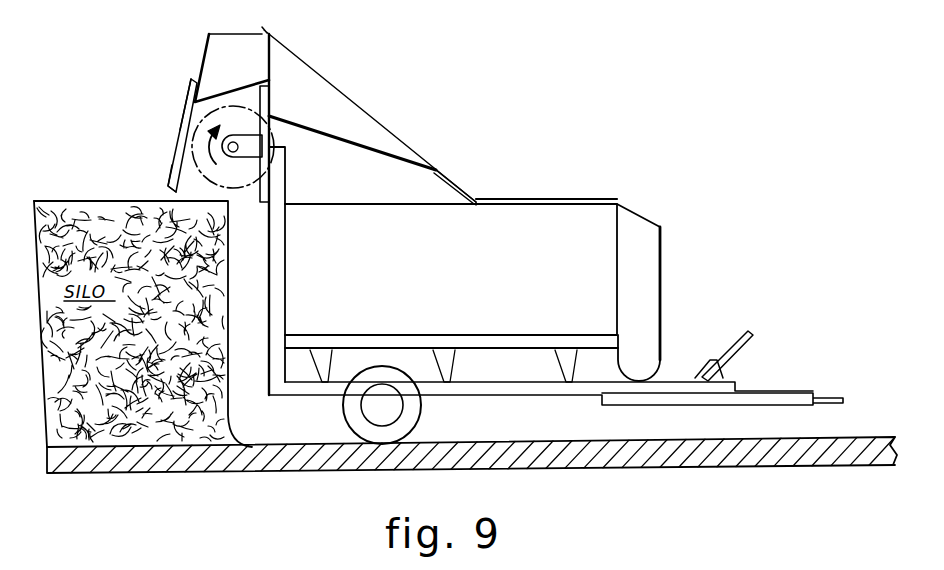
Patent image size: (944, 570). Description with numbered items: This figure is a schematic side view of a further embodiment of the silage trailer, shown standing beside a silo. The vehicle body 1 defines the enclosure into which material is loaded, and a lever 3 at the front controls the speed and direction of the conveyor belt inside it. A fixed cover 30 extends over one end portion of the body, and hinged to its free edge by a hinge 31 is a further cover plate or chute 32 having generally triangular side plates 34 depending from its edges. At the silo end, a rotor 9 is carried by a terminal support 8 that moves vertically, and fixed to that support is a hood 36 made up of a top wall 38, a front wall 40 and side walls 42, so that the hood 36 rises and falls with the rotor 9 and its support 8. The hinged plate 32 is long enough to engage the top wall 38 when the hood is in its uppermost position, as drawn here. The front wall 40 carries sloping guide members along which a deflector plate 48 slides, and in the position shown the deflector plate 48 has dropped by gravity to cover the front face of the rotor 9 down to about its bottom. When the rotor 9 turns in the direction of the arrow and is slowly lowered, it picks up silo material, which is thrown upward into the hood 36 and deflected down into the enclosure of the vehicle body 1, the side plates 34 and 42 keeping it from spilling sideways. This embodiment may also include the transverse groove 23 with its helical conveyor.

The vehicle body 1 is at (575, 212).
The lever 3 is at (744, 346).
The terminal support 8 is at (247, 136).
The rotor 9 is at (240, 184).
The transverse groove 23 is at (645, 360).
The fixed cover 30 is at (526, 200).
The hinge 31 is at (477, 200).
The cover plate or chute 32 is at (373, 117).
The side plates 34 is at (327, 90).
The hood 36 is at (192, 59).
The top wall 38 is at (228, 36).
The front wall 40 is at (200, 62).
The side walls 42 is at (245, 68).
The deflector plate 48 is at (173, 161).